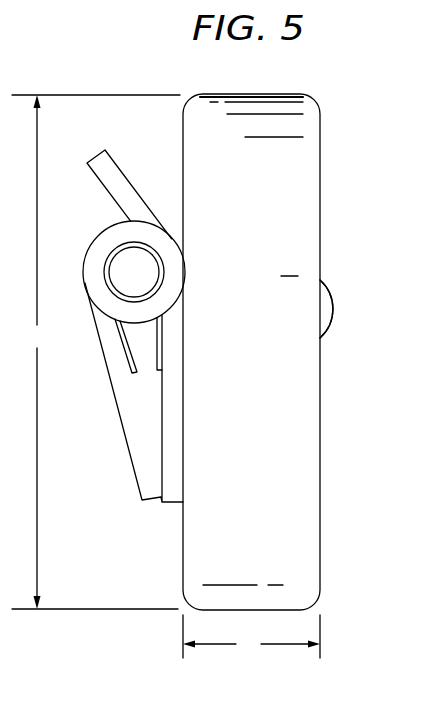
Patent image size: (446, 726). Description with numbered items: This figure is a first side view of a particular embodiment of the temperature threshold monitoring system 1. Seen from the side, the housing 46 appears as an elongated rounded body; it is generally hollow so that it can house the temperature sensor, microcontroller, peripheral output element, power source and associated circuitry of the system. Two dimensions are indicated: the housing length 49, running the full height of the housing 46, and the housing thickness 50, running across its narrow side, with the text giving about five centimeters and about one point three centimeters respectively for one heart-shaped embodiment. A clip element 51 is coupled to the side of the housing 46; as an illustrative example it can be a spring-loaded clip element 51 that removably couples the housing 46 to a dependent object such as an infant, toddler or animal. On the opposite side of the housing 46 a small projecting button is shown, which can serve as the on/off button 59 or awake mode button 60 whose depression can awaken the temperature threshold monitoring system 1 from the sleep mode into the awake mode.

The temperature threshold monitoring system 1 is at (392, 113).
The housing 46 is at (255, 573).
The housing length 49 is at (96, 352).
The housing thickness 50 is at (251, 637).
The clip element 51 is at (108, 243).
The on/off button 59 is at (323, 308).
The awake mode button 60 is at (323, 308).